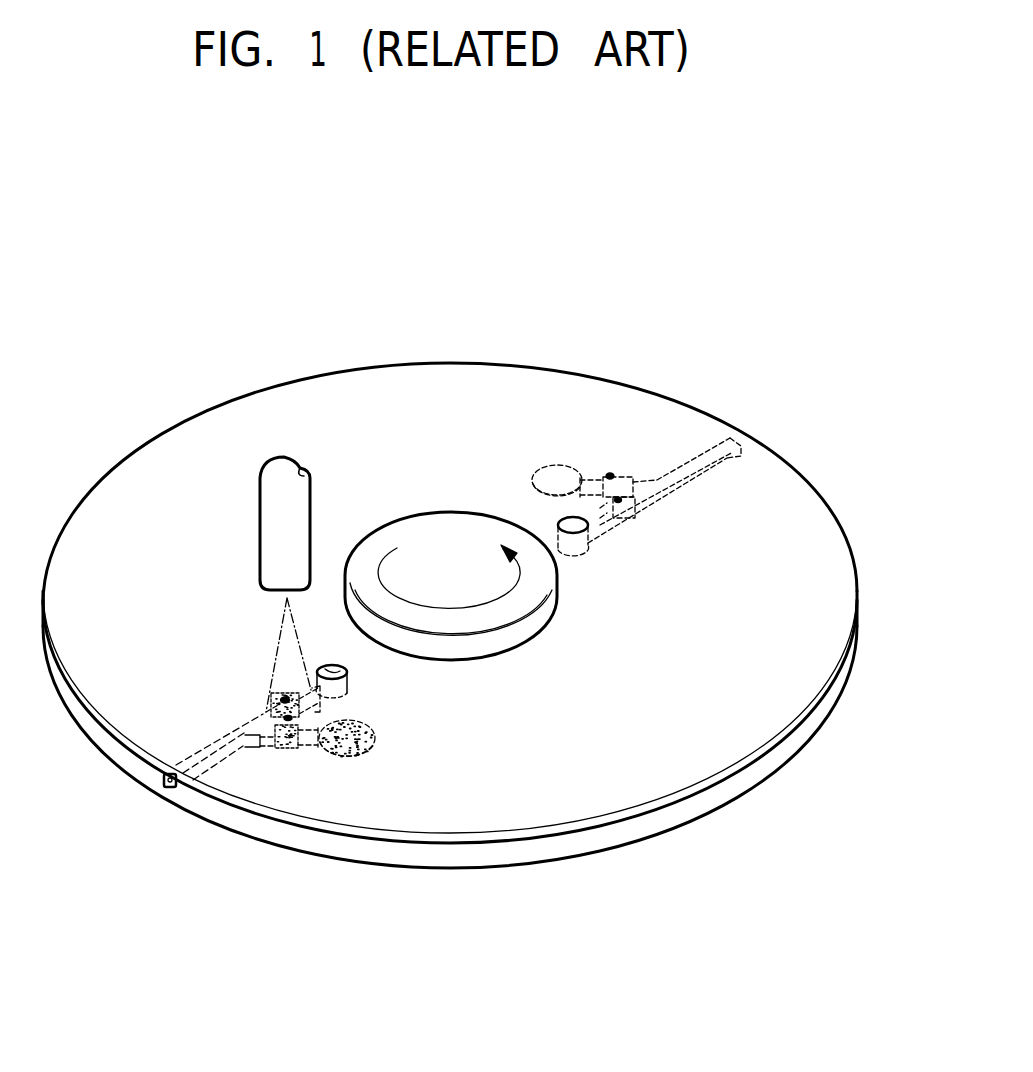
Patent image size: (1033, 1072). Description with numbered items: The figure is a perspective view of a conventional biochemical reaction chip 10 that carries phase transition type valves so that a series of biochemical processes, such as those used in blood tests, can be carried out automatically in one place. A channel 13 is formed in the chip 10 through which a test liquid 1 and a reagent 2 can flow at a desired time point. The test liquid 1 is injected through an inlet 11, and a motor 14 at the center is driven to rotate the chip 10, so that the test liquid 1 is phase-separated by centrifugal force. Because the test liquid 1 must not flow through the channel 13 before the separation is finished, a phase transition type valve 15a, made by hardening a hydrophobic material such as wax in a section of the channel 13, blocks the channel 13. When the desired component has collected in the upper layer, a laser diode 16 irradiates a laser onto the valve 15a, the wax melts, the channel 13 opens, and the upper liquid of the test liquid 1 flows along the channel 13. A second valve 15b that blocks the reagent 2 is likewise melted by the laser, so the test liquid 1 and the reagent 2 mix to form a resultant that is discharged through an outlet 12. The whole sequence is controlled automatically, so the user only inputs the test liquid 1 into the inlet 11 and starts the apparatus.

The biochemical reaction chip 10 is at (802, 452).
The motor 14 is at (449, 519).
The laser diode 16 is at (262, 524).
The outlet 12 is at (167, 790).
The channel 13 is at (215, 745).
The phase transition type valve 15a is at (278, 700).
The valve 15b is at (281, 748).
The test liquid 1 is at (340, 663).
The inlet 11 is at (347, 683).
The reagent 2 is at (367, 753).